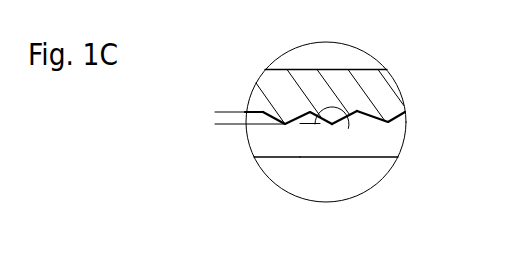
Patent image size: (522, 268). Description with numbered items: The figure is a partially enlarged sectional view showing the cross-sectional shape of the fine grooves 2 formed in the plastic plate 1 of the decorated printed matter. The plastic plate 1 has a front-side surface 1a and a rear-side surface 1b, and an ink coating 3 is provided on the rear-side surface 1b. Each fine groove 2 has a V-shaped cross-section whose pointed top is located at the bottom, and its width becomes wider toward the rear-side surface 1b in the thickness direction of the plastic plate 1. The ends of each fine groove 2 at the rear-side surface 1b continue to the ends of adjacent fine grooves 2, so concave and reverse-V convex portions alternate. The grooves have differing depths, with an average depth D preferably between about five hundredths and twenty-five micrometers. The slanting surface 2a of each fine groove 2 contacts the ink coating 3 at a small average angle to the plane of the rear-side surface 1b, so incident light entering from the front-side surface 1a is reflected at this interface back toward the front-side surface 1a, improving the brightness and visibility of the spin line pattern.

The plastic plate 1 is at (383, 138).
The front-side surface 1a is at (263, 158).
The rear-side surface 1b is at (248, 112).
The fine groove 2 is at (334, 68).
The slanting surface 2a is at (347, 113).
The ink coating 3 is at (382, 90).
The average depth D is at (258, 102).